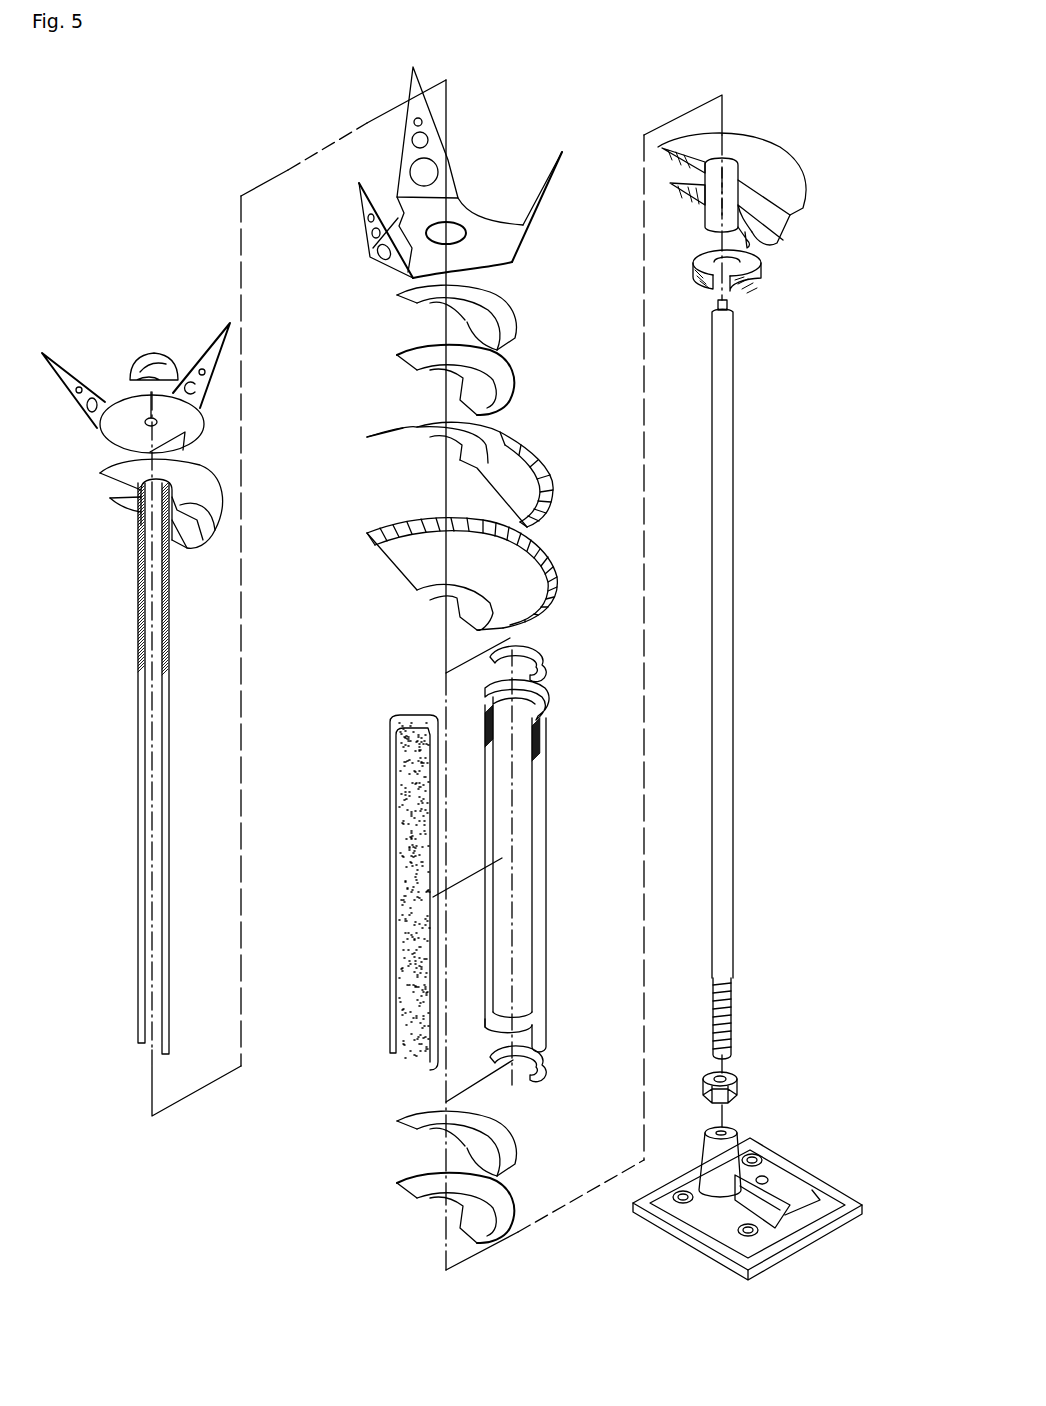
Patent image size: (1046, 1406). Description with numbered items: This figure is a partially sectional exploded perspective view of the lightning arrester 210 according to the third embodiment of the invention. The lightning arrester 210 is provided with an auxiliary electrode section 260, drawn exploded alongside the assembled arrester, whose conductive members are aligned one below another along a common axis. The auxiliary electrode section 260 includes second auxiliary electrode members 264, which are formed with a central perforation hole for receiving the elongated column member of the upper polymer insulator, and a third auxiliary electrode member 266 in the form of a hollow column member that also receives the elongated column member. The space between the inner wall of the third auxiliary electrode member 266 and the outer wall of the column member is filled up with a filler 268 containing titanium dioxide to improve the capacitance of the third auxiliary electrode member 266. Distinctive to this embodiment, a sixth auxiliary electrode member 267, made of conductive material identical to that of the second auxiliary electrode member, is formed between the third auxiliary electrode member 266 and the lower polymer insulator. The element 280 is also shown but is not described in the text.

The lightning arrester 210 is at (176, 166).
The auxiliary electrode section 260 is at (355, 1164).
The second auxiliary electrode member 264 is at (517, 322).
The third auxiliary electrode member 266 is at (545, 858).
The sixth auxiliary electrode member 267 is at (517, 1140).
The filler 268 is at (400, 715).
The split washer 280 is at (764, 278).